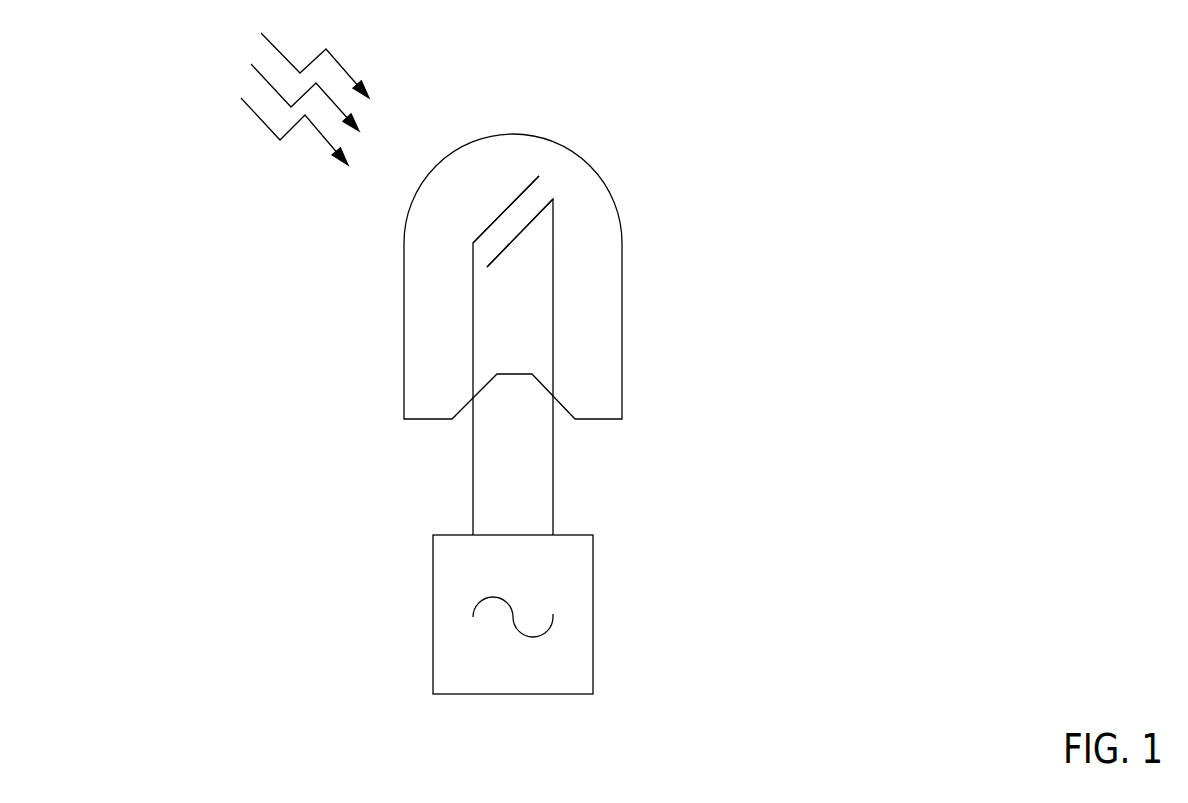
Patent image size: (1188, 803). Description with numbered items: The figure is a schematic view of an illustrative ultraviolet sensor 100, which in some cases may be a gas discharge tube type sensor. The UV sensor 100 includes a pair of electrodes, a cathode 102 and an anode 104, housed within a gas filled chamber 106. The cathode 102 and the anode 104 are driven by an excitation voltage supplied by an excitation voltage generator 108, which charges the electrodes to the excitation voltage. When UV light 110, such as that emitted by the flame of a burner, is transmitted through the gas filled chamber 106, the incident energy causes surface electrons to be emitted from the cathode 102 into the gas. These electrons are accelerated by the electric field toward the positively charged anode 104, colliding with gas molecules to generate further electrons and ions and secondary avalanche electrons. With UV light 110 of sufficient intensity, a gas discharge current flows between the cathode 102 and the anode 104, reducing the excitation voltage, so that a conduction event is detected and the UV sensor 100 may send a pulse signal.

The ultraviolet (UV) sensor 100 is at (630, 98).
The cathode 102 is at (507, 212).
The anode 104 is at (522, 235).
The gas filled chamber 106 is at (600, 213).
The excitation voltage generator 108 is at (593, 562).
The UV light 110 is at (261, 120).